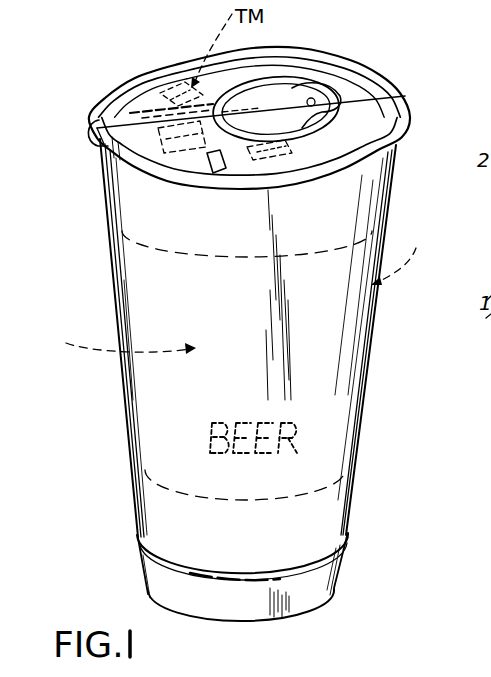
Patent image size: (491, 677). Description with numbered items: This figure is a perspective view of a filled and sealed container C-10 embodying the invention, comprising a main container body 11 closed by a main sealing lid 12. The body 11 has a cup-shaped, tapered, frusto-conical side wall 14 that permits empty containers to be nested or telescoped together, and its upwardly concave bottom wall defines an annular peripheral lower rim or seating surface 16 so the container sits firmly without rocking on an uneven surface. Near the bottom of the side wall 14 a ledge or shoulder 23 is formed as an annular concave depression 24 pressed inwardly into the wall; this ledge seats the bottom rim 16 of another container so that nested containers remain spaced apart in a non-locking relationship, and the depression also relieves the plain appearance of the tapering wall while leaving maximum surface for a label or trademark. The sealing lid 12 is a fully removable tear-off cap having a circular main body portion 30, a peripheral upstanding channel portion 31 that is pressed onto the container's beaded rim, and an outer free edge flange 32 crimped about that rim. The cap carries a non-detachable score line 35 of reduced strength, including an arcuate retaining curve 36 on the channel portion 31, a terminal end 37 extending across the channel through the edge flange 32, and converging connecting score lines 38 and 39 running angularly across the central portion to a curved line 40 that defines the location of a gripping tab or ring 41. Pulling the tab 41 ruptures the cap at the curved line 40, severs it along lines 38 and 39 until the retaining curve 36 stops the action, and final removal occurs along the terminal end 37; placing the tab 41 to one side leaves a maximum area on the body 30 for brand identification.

The container 10 is at (104, 278).
The main container body 11 is at (369, 451).
The sealing lid 12 is at (384, 76).
The side wall 14 is at (148, 432).
The annular peripheral lower rim or seating surface 16 is at (309, 616).
The ledge or shoulder 23 is at (352, 530).
The annular concave depression 24 is at (137, 537).
The circular main body portion 30 is at (272, 106).
The annular upstanding channel portion 31 is at (167, 60).
The outer free edge flange 32 is at (398, 144).
The score line 35 is at (305, 128).
The arcuate leading or retaining curve 36 is at (218, 178).
The terminal end 37 is at (88, 127).
The connecting score line 38 is at (145, 122).
The connecting score line 39 is at (253, 157).
The curved line 40 is at (405, 96).
The gripping tab or ring 41 is at (362, 97).